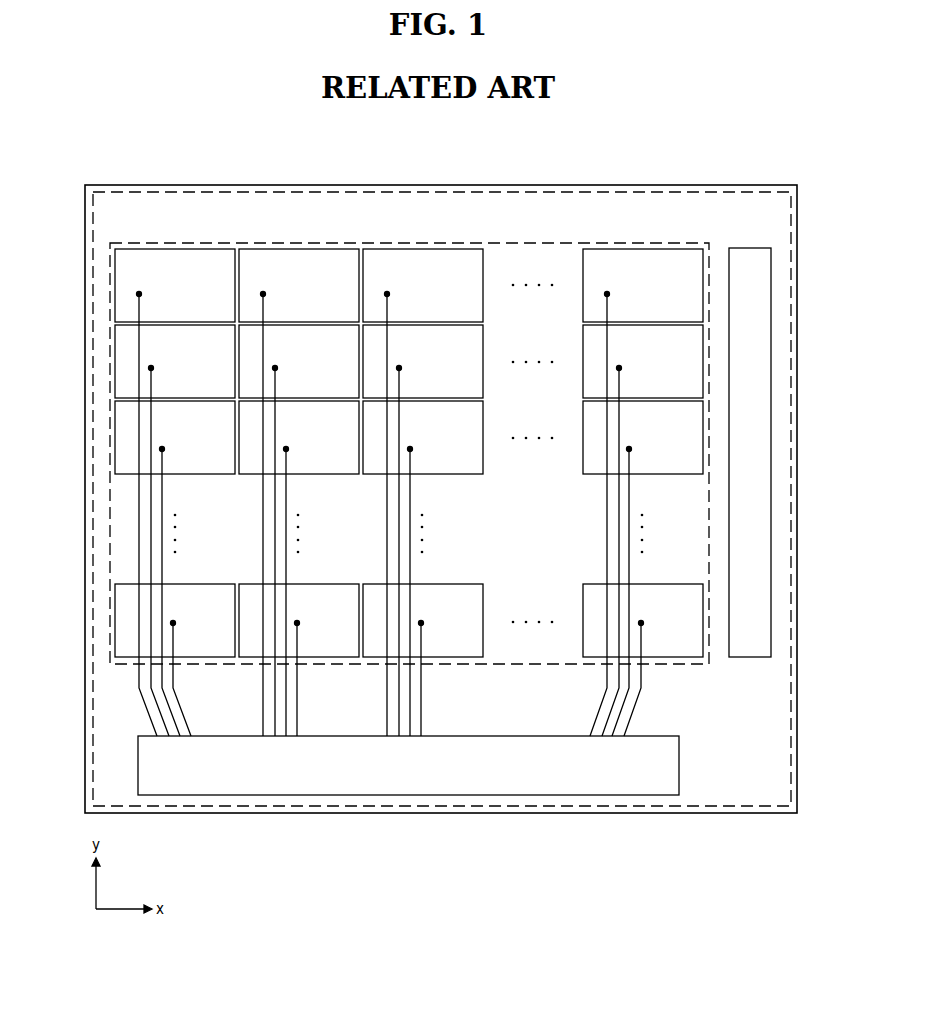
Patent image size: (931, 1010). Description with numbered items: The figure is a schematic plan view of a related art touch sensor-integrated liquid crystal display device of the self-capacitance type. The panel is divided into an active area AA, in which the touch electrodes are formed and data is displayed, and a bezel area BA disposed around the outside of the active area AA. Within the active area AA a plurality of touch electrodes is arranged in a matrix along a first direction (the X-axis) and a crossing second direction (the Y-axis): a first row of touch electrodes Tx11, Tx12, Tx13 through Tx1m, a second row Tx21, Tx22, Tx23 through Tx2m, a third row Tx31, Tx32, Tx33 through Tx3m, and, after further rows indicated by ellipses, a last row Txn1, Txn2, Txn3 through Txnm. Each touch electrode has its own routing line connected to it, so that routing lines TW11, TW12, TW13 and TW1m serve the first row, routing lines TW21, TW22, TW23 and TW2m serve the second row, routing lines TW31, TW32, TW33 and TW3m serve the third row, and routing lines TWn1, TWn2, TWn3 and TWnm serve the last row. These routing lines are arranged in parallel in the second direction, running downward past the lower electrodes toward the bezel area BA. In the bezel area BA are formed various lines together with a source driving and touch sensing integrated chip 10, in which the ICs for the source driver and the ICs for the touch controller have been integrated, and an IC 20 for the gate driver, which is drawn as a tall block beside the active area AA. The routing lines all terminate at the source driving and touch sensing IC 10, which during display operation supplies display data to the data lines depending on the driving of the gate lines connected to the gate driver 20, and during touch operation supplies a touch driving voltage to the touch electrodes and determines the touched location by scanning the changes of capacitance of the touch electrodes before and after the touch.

The source driving and touch sensing integrated chip 10 is at (552, 782).
The IC for gate driver 20 is at (748, 248).
The active area AA is at (523, 242).
The bezel area BA is at (571, 193).
The touch electrode Tx11 is at (175, 285).
The touch electrode Tx12 is at (299, 285).
The touch electrode Tx13 is at (423, 285).
The touch electrode Tx1m is at (643, 285).
The touch electrode Tx21 is at (175, 361).
The touch electrode Tx22 is at (299, 361).
The touch electrode Tx23 is at (423, 361).
The touch electrode Tx2m is at (643, 361).
The touch electrode Tx31 is at (175, 437).
The touch electrode Tx32 is at (299, 437).
The touch electrode Tx33 is at (423, 437).
The touch electrode Tx3m is at (643, 437).
The touch electrode Txn1 is at (175, 620).
The touch electrode Txn2 is at (299, 620).
The touch electrode Txn3 is at (423, 620).
The touch electrode Txnm is at (643, 620).
The routing line TW11 is at (140, 306).
The routing line TW12 is at (264, 306).
The routing line TW13 is at (388, 306).
The routing line TW1m is at (608, 306).
The routing line TW21 is at (152, 380).
The routing line TW22 is at (276, 380).
The routing line TW23 is at (400, 380).
The routing line TW2m is at (620, 380).
The routing line TW31 is at (163, 461).
The routing line TW32 is at (287, 461).
The routing line TW33 is at (411, 461).
The routing line TW3m is at (630, 461).
The routing line TWn1 is at (174, 635).
The routing line TWn2 is at (298, 635).
The routing line TWn3 is at (422, 635).
The routing line TWnm is at (642, 635).